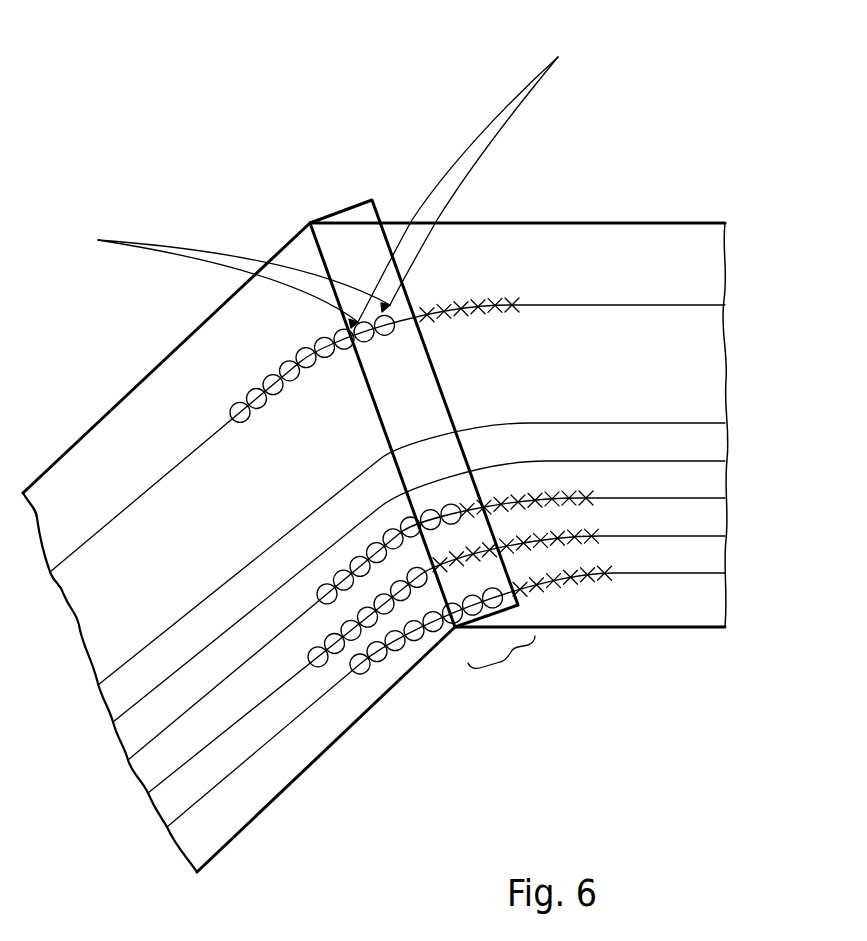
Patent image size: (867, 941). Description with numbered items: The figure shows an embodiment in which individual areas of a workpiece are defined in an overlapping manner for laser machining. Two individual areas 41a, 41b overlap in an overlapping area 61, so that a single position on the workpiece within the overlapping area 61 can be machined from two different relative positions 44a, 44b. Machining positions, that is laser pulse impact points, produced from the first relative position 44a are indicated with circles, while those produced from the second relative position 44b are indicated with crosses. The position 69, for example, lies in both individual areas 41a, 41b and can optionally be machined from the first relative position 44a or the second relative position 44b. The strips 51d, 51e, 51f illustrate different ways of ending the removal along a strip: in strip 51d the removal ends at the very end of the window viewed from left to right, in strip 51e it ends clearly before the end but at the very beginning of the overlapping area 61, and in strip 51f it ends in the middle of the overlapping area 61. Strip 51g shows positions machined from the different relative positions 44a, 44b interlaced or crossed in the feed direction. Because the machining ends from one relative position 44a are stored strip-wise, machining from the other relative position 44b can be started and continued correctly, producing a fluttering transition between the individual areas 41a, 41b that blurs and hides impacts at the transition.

The individual area 41a is at (247, 812).
The individual area 41b is at (638, 627).
The position 69 is at (357, 262).
The overlapping area 61 is at (501, 666).
The strip 51g is at (698, 305).
The strip 51f is at (145, 752).
The strip 51e is at (163, 787).
The strip 51d is at (185, 818).
The first relative position 44a is at (74, 236).
The second relative position 44b is at (568, 33).